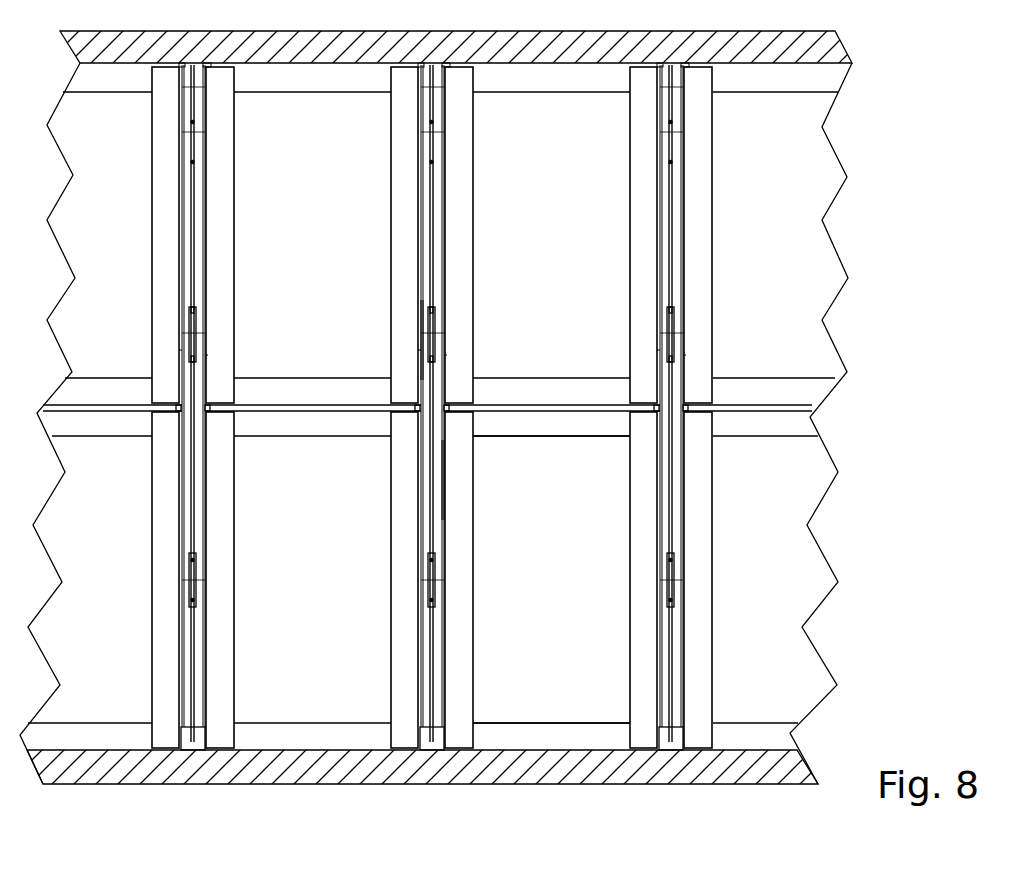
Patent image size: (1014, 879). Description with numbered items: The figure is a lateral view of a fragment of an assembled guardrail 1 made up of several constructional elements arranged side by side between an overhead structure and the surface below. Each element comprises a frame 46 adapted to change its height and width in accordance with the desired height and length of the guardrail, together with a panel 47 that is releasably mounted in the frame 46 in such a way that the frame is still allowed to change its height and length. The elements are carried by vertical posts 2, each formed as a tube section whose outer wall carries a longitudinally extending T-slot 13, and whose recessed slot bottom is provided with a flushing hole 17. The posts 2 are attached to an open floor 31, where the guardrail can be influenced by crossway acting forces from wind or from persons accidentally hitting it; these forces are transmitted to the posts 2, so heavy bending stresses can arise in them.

The partition wall system 1 is at (555, 543).
The post 2 is at (420, 627).
The T-slot 13 is at (432, 432).
The flushing hole 17 is at (445, 507).
The open floor 31 is at (612, 778).
The frame 46 is at (470, 647).
The panel 47 is at (565, 651).